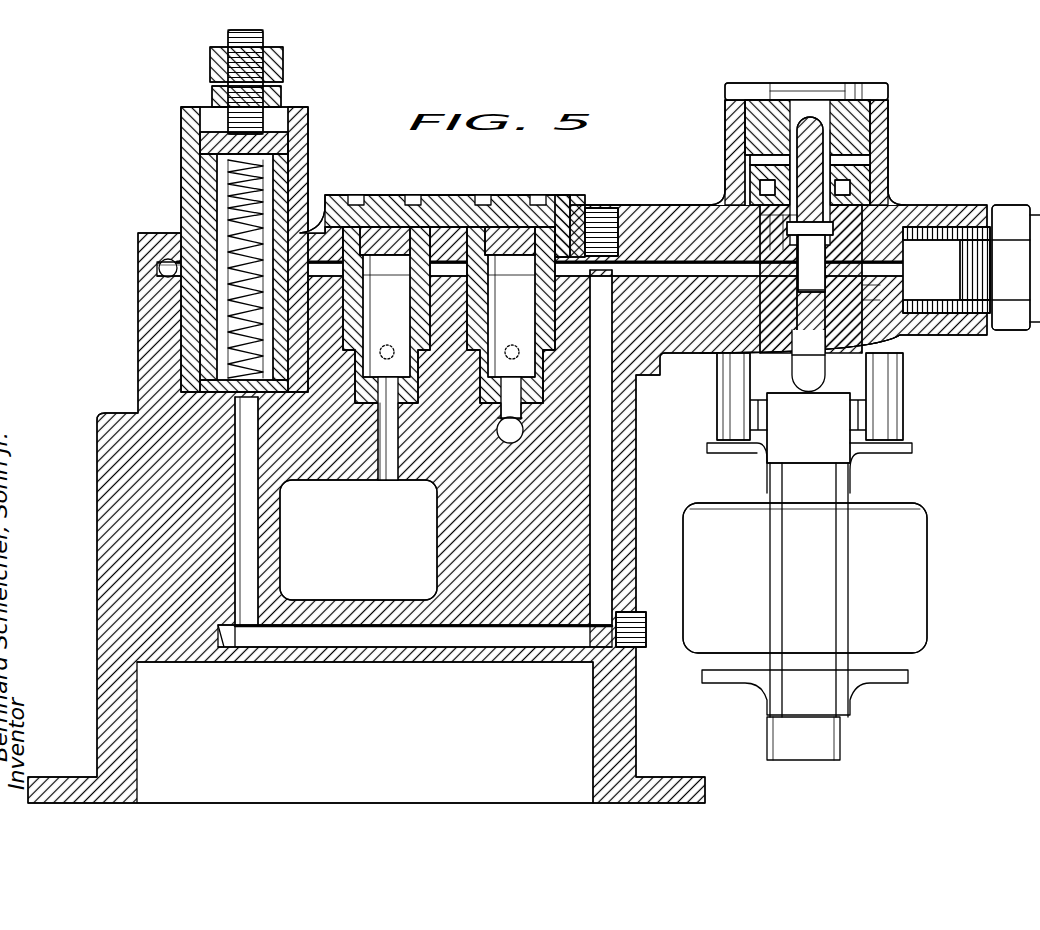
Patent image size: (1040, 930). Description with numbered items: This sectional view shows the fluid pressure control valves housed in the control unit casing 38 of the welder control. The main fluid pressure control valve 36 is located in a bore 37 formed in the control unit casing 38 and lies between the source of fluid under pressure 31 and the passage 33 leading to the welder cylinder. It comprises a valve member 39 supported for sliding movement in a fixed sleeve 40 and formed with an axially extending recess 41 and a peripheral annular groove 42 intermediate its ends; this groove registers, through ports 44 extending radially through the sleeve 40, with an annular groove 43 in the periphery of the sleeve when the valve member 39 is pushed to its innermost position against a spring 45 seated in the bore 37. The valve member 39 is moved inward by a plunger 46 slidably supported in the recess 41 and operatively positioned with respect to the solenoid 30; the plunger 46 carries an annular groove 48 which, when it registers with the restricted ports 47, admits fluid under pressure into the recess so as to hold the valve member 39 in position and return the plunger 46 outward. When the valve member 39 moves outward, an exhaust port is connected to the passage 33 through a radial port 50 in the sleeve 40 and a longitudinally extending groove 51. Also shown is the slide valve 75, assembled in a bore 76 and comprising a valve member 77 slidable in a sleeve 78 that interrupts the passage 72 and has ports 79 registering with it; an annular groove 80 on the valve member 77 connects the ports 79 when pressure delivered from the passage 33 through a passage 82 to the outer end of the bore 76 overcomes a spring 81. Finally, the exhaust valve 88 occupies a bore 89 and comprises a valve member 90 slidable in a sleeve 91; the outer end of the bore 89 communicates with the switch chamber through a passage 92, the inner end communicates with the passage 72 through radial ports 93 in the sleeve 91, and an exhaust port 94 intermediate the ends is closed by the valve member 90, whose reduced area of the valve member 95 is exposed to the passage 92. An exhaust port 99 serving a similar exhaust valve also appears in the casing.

The solenoid 30 is at (905, 525).
The source of fluid under pressure 31 is at (935, 222).
The passage 33 is at (672, 275).
The main fluid pressure control valve 36 is at (822, 117).
The bore 37 is at (875, 215).
The control unit casing 38 is at (641, 191).
The valve member 39 is at (870, 162).
The fixed sleeve 40 is at (870, 292).
The axially extending recess 41 is at (810, 257).
The annular groove 42 is at (975, 318).
The annular groove 43 is at (918, 215).
The ports 44 is at (893, 332).
The spring 45 is at (882, 112).
The plunger 46 is at (815, 375).
The restricted ports 47 is at (715, 353).
The annular groove 48 is at (832, 120).
The radial port 50 is at (762, 238).
The longitudinally extending groove 51 is at (765, 215).
The passage 72 is at (320, 232).
The slide valve 75 is at (313, 70).
The bore 76 is at (285, 150).
The valve member 77 is at (215, 245).
The sleeve 78 is at (208, 178).
The ports 79 is at (195, 263).
The annular groove 80 is at (205, 327).
The spring 81 is at (228, 150).
The passage 82 is at (238, 462).
The exhaust valve 88 is at (534, 193).
The bore 89 is at (572, 240).
The valve member 90 is at (540, 350).
The sleeve 91 is at (583, 268).
The passage 92 is at (512, 432).
The radial ports 93 is at (500, 285).
The exhaust port 94 is at (511, 323).
The area of the valve member 95 is at (512, 412).
The exhaust port 99 is at (386, 353).